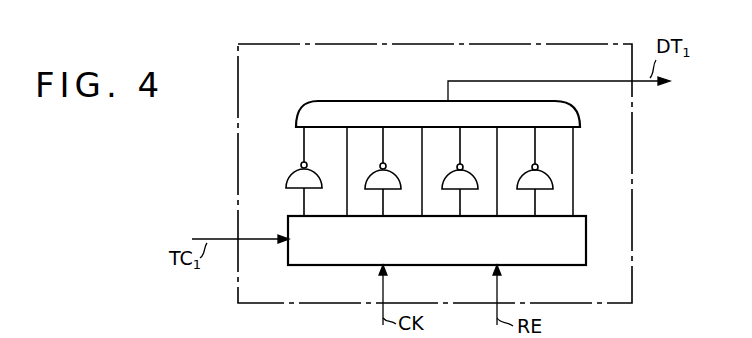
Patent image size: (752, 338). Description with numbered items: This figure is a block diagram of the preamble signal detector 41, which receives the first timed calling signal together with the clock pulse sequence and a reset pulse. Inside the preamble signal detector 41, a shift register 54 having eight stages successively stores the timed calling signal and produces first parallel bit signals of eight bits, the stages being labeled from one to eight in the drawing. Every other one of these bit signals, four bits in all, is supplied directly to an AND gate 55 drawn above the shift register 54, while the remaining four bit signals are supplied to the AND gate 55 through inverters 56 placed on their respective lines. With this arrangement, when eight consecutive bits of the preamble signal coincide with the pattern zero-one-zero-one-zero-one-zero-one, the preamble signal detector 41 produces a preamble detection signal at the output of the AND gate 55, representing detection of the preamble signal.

The preamble signal detector 41 is at (634, 216).
The shift register 54 is at (297, 266).
The AND gate 55 is at (327, 100).
The inverters 56 is at (289, 188).